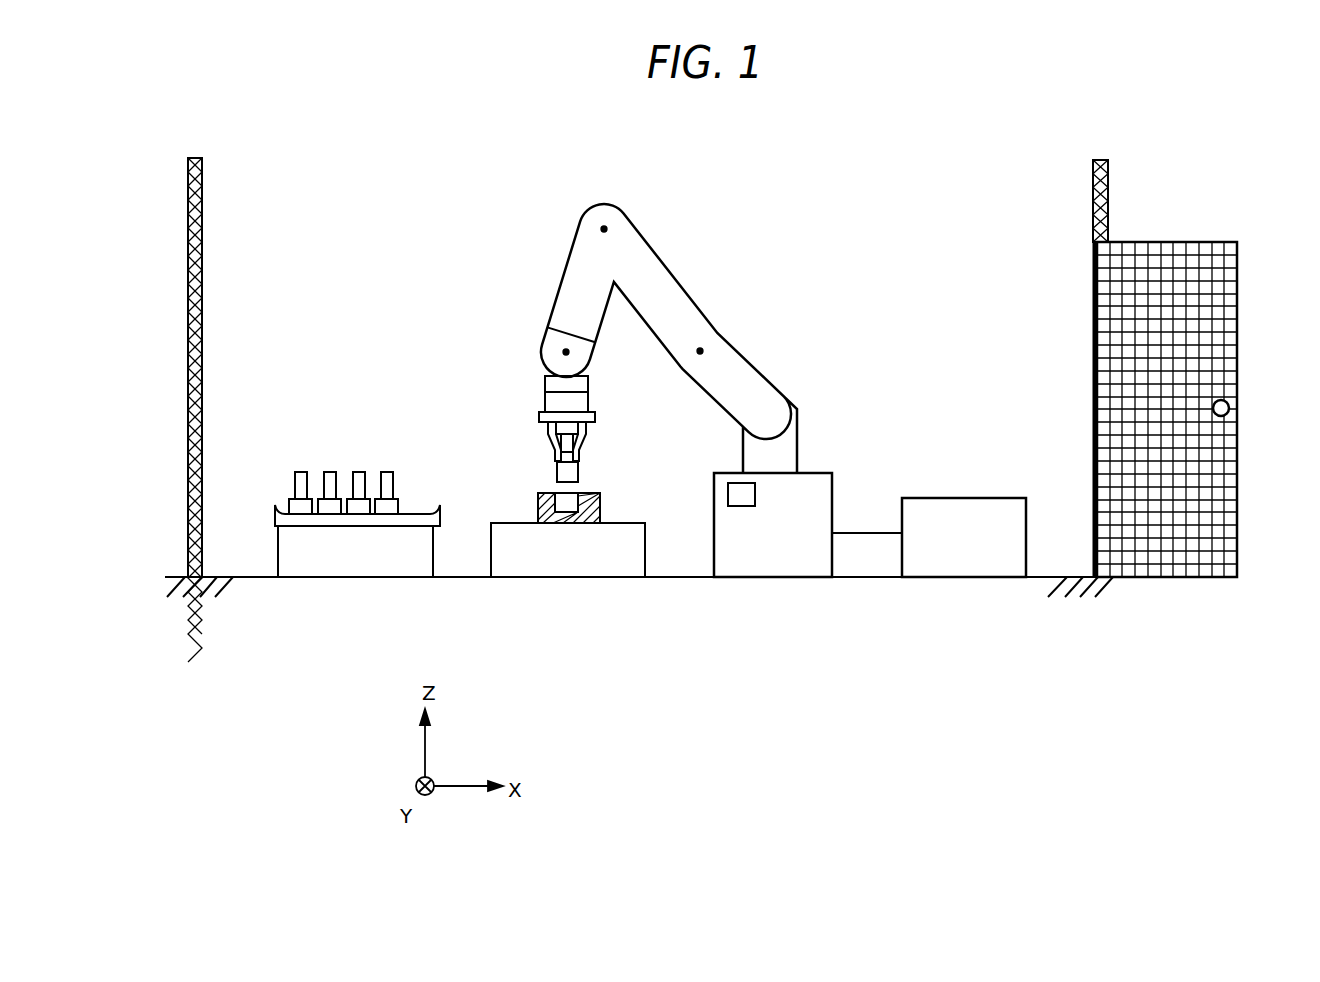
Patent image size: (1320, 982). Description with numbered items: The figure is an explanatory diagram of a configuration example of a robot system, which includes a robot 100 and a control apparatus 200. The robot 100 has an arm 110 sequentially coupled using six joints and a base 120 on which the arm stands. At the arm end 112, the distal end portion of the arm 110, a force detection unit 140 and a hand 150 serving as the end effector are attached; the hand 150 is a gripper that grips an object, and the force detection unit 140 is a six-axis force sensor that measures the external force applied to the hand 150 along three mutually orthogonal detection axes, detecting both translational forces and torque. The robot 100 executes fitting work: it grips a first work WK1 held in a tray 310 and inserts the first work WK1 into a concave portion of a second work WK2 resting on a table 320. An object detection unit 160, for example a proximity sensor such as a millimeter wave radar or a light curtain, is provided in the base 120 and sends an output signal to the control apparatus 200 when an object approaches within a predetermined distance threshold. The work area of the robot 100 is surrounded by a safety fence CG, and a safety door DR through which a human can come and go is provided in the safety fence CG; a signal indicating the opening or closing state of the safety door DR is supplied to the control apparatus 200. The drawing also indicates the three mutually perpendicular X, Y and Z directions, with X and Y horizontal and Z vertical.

The robot 100 is at (749, 390).
The arm 110 is at (728, 362).
The arm end 112 is at (592, 380).
The base 120 is at (832, 487).
The force detection unit 140 is at (592, 400).
The hand 150 is at (593, 427).
The object detection unit 160 is at (728, 494).
The control apparatus 200 is at (945, 498).
The tray 310 is at (323, 526).
The table 320 is at (555, 577).
The safety fence CG is at (202, 193).
The safety door DR is at (1157, 242).
The first work WK1 is at (398, 463).
The second work WK2 is at (538, 510).